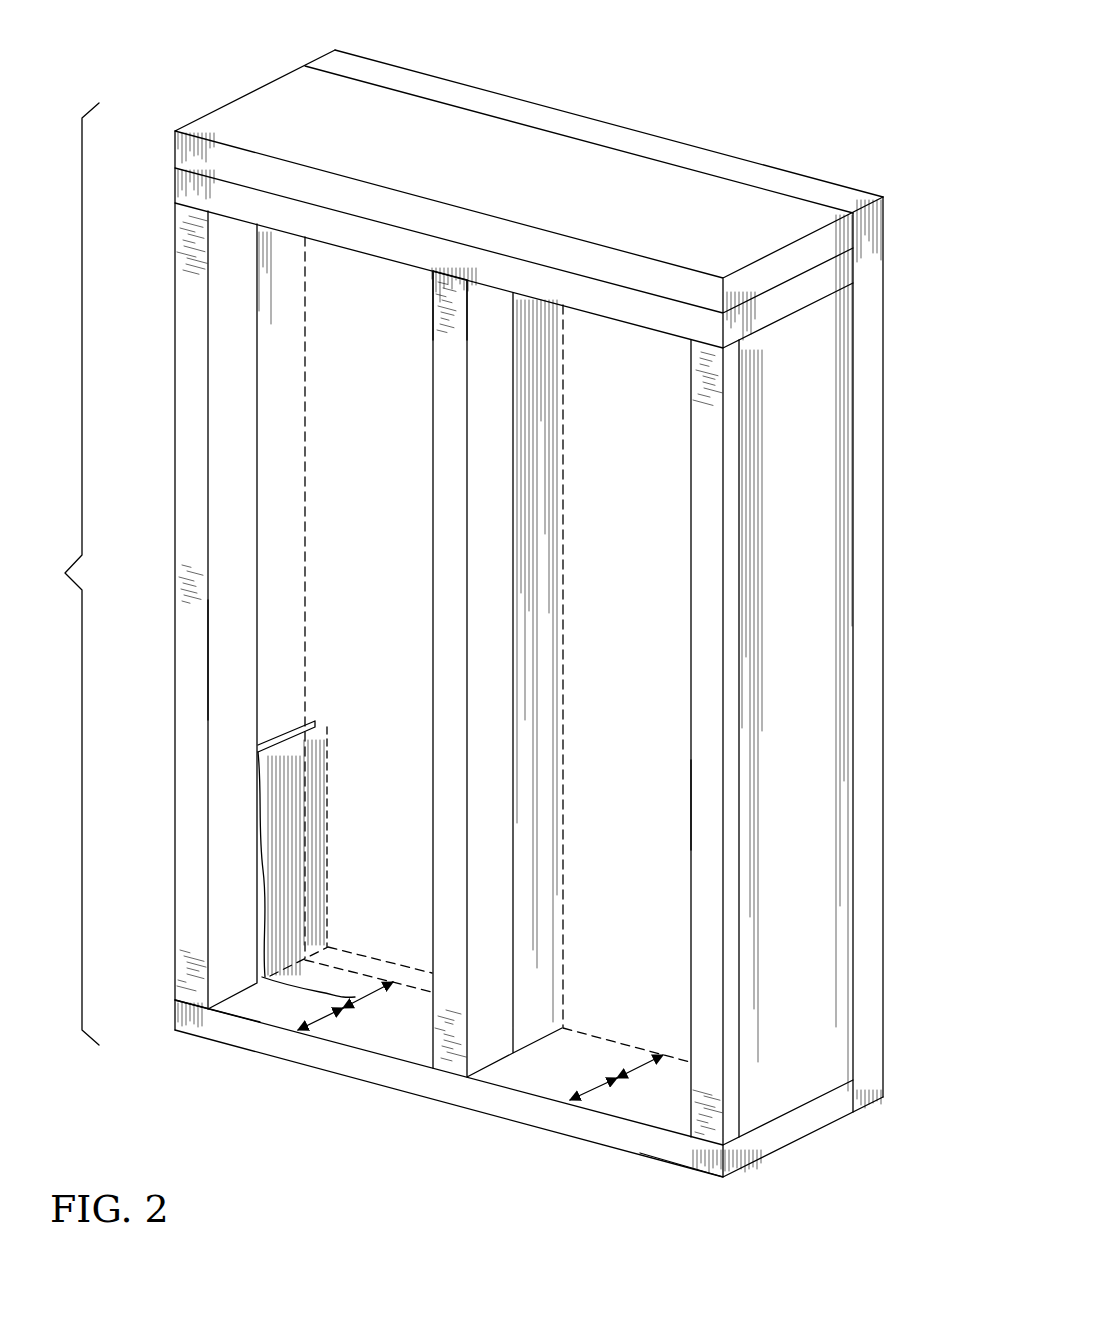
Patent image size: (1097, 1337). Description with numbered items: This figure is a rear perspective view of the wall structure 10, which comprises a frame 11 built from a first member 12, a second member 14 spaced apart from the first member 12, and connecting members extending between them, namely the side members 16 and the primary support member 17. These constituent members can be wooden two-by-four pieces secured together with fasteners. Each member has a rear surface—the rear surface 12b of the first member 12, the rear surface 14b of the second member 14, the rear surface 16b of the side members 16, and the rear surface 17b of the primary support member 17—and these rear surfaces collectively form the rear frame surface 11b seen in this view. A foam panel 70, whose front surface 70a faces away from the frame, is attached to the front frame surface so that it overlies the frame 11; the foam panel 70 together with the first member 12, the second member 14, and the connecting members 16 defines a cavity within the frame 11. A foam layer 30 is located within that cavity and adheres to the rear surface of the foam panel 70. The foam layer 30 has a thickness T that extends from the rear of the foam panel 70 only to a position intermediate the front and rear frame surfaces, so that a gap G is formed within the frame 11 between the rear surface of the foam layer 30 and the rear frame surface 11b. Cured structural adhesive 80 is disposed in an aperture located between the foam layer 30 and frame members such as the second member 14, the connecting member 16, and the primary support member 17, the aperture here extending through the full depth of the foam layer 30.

The wall structure 10 is at (607, 86).
The frame 11 is at (106, 574).
The rear frame surface 11b is at (232, 1027).
The first member 12 is at (283, 111).
The rear surface of first member 12b is at (355, 200).
The second member 14 is at (783, 1130).
The rear surface of second member 14b is at (680, 1155).
The side member 16 is at (175, 382).
The rear surface of connecting member 16b is at (190, 680).
The primary support member 17 is at (495, 1042).
The rear surface of primary support member 17b is at (458, 327).
The foam layer 30 is at (330, 520).
The foam panel 70 is at (818, 193).
The front surface of foam panel 70a is at (885, 347).
The cured structural adhesive 80 is at (260, 818).
The gap G is at (317, 1018).
The thickness T is at (377, 995).